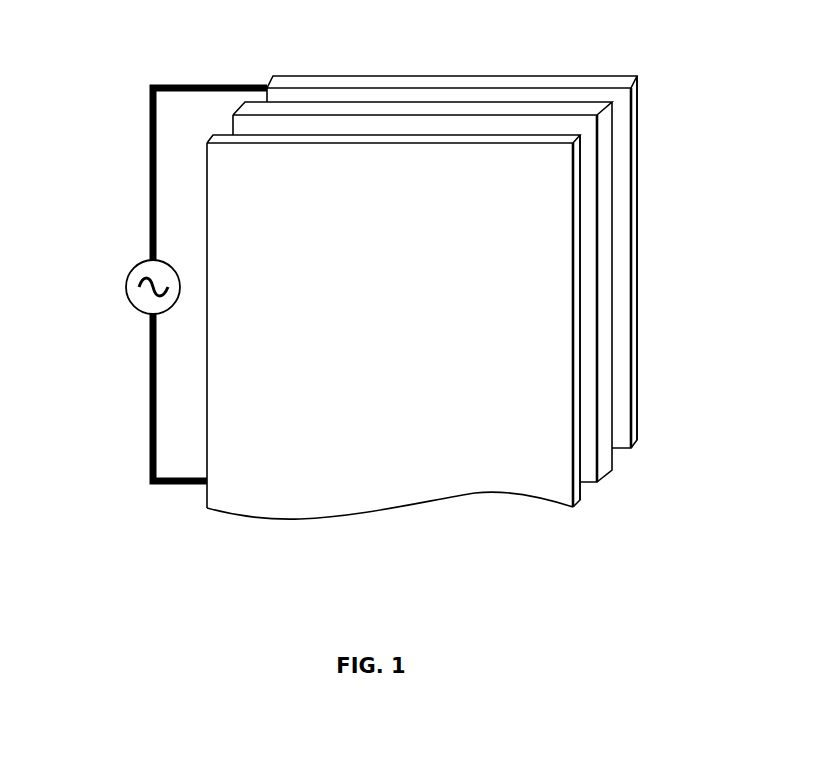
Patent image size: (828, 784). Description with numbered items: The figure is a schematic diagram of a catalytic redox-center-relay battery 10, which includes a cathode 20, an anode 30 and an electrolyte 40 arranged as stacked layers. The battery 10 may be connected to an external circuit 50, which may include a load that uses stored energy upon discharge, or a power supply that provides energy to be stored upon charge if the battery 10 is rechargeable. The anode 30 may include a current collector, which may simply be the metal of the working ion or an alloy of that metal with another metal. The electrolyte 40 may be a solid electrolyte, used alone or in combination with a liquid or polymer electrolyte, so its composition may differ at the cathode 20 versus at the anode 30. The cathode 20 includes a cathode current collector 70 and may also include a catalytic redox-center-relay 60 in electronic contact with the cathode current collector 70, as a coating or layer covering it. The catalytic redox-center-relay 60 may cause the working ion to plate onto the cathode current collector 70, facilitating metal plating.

The catalytic redox-center-relay battery 10 is at (116, 108).
The cathode 20 is at (552, 68).
The anode 30 is at (246, 530).
The electrolyte 40 is at (611, 261).
The external circuit 50 is at (147, 207).
The catalytic redox-center-relay 60 is at (630, 207).
The cathode current collector 70 is at (639, 91).